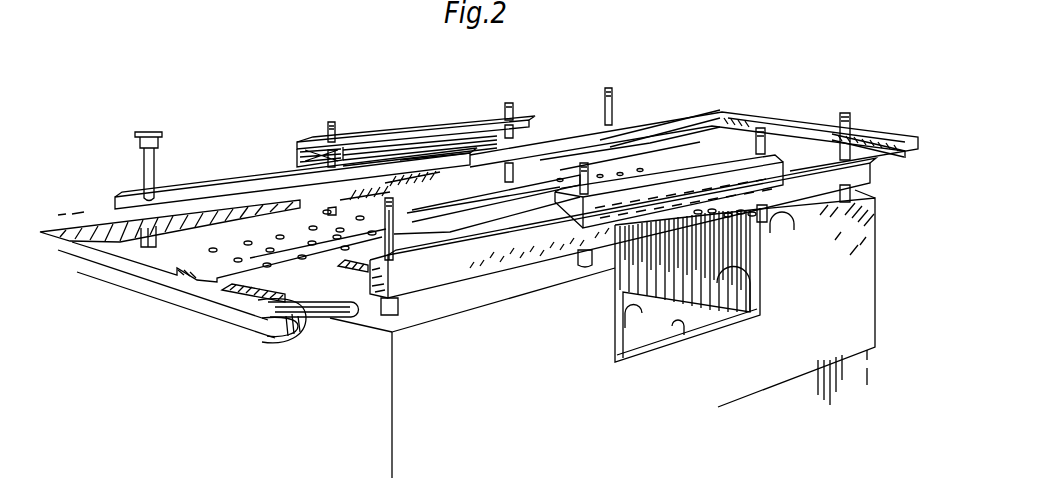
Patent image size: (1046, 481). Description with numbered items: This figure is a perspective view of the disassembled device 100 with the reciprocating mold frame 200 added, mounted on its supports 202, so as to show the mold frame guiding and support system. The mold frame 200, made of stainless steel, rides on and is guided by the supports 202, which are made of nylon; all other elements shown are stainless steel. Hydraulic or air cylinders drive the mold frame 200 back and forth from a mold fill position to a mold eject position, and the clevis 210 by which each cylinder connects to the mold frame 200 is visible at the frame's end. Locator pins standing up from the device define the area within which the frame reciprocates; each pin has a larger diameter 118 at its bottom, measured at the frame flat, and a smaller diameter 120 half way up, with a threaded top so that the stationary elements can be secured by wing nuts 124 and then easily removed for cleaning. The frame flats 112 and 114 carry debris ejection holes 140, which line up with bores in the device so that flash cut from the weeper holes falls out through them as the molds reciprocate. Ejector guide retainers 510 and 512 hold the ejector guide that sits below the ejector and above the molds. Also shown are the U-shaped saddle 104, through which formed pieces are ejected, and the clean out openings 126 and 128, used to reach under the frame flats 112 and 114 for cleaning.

The device 100 is at (623, 334).
The U-shaped saddle 104 is at (672, 326).
The frame flat 112 is at (511, 300).
The frame flat 114 is at (770, 233).
The larger diameter 118 is at (375, 308).
The smaller diameter 120 is at (399, 221).
The wing nut 124 is at (147, 130).
The clean out opening 126 is at (642, 313).
The clean out opening 128 is at (718, 283).
The debris ejection holes 140 is at (277, 236).
The reciprocating mold frame 200 is at (812, 125).
The mold frame supports 202 is at (190, 183).
The clevis 210 is at (310, 332).
The ejector guide retainer 510 is at (432, 122).
The ejector guide retainer 512 is at (692, 170).